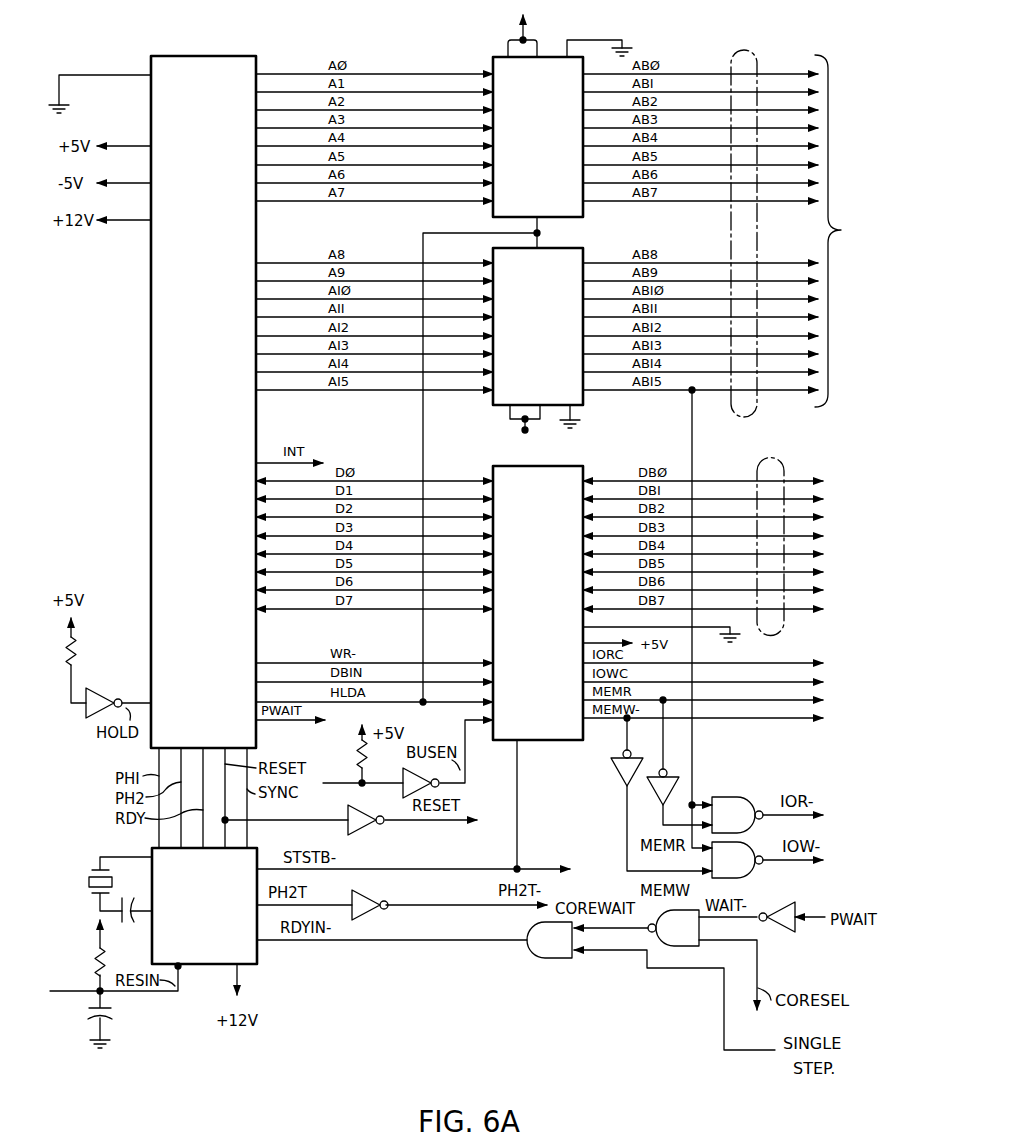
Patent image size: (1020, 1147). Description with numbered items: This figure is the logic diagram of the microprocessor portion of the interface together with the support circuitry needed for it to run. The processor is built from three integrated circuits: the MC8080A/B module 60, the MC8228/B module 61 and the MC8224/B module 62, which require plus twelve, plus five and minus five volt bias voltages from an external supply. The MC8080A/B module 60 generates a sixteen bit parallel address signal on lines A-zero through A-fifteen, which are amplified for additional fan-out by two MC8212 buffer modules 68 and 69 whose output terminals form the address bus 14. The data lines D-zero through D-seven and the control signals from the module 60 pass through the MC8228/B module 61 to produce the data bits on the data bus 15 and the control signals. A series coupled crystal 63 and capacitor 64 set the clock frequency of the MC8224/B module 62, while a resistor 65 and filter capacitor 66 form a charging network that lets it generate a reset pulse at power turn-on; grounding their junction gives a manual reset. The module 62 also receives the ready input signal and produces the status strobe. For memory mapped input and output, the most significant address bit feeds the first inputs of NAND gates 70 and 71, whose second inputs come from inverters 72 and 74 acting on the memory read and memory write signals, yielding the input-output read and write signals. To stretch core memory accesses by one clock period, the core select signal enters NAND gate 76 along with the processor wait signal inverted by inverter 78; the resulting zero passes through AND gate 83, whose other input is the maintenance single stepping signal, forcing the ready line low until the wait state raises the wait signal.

The address bus 14 is at (730, 50).
The data bus 15 is at (785, 470).
The MC8080A/B module 60 is at (151, 542).
The MC8228/B module 61 is at (538, 742).
The MC8224/B module 62 is at (258, 966).
The crystal 63 is at (91, 868).
The capacitor 64 is at (128, 901).
The resistor 65 is at (95, 967).
The filter capacitor 66 is at (113, 1020).
The MC8212 buffer module 68 is at (583, 400).
The MC8212 buffer module 69 is at (583, 218).
The NAND gate 70 is at (737, 797).
The NAND gate 71 is at (757, 875).
The inverter 72 is at (651, 796).
The inverter 74 is at (611, 770).
The NAND gate 76 is at (688, 950).
The inverter 78 is at (793, 930).
The AND gate 83 is at (556, 958).